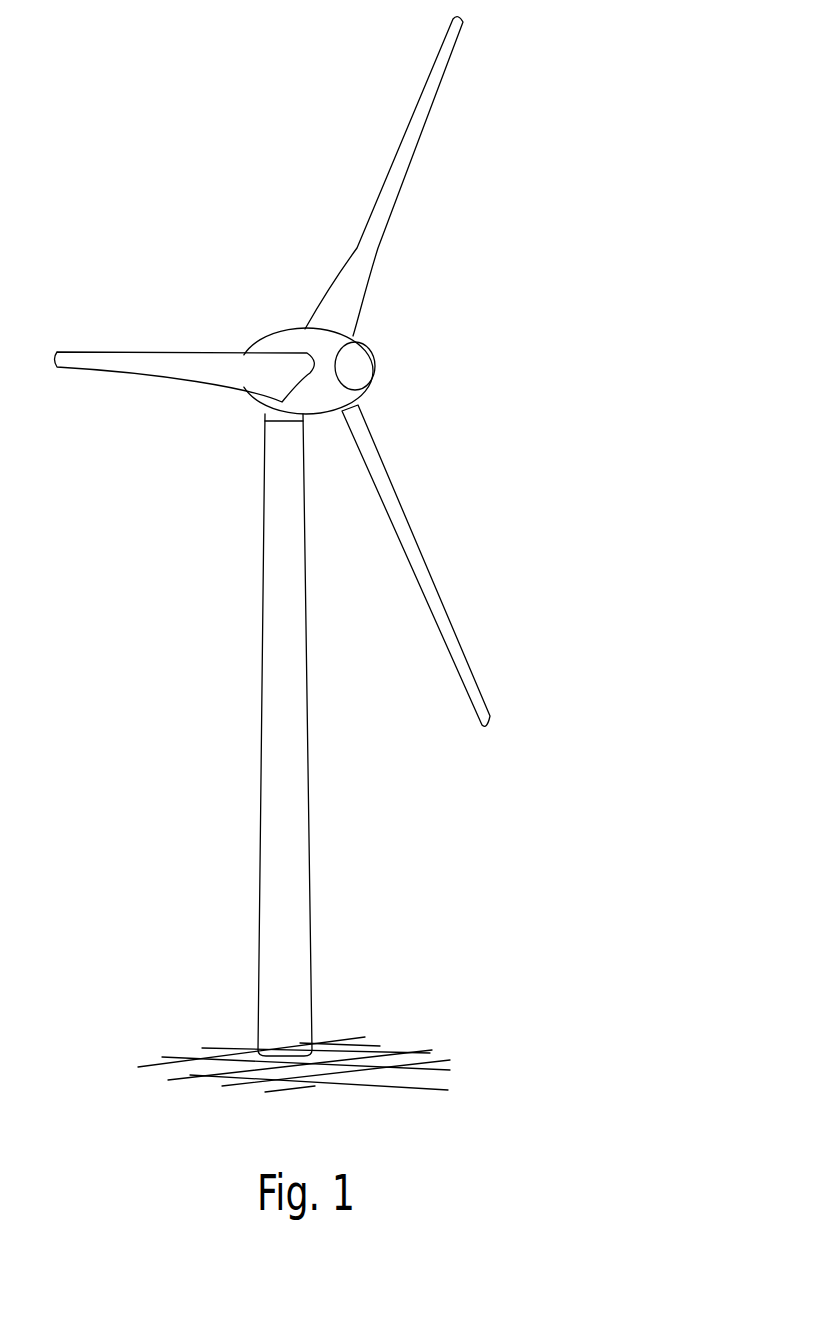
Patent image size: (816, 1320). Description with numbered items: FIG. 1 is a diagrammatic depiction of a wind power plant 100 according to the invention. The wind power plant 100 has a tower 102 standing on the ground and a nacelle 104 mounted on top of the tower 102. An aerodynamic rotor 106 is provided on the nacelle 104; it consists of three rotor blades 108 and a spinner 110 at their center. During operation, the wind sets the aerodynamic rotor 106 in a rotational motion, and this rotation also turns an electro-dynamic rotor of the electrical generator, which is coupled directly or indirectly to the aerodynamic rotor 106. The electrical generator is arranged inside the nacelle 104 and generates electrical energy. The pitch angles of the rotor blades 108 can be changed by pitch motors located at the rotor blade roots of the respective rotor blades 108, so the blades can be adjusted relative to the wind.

The wind power plant 100 is at (208, 490).
The tower 102 is at (303, 822).
The nacelle 104 is at (270, 343).
The aerodynamic rotor 106 is at (498, 275).
The rotor blades 108 is at (396, 173).
The spinner 110 is at (362, 365).